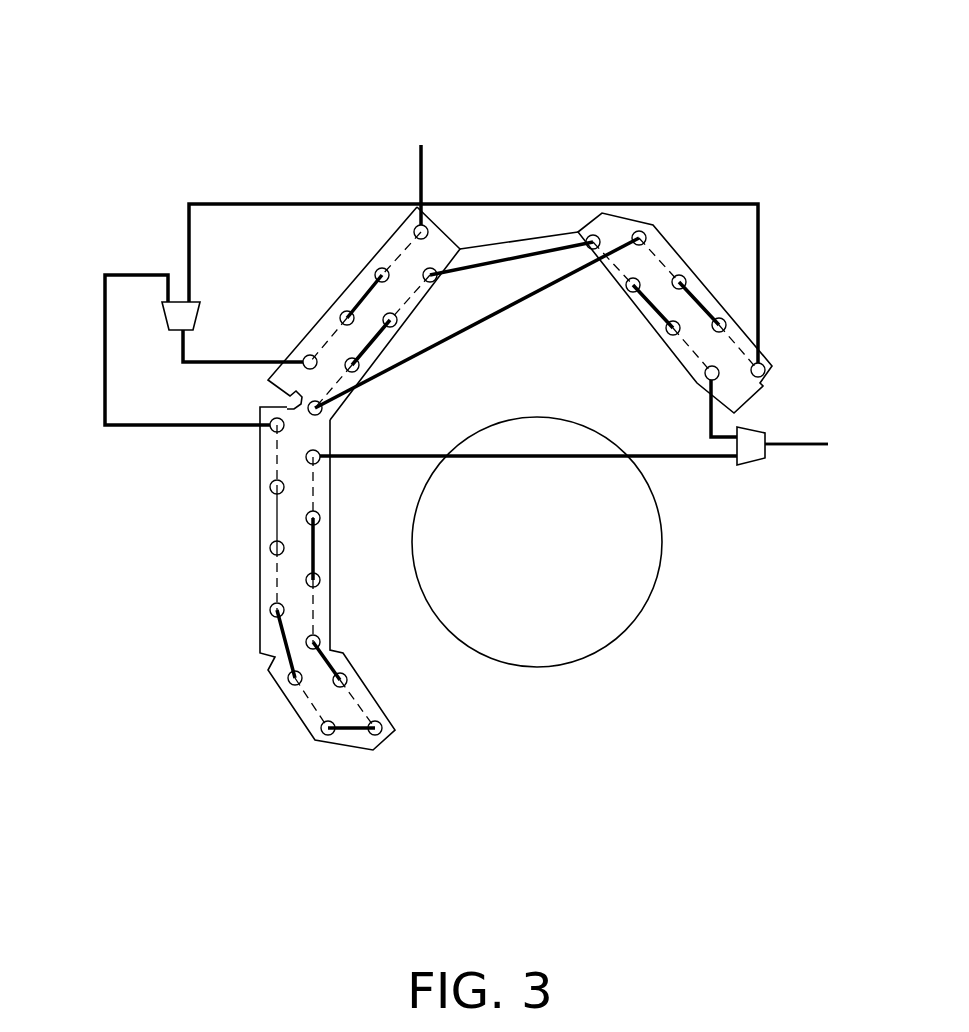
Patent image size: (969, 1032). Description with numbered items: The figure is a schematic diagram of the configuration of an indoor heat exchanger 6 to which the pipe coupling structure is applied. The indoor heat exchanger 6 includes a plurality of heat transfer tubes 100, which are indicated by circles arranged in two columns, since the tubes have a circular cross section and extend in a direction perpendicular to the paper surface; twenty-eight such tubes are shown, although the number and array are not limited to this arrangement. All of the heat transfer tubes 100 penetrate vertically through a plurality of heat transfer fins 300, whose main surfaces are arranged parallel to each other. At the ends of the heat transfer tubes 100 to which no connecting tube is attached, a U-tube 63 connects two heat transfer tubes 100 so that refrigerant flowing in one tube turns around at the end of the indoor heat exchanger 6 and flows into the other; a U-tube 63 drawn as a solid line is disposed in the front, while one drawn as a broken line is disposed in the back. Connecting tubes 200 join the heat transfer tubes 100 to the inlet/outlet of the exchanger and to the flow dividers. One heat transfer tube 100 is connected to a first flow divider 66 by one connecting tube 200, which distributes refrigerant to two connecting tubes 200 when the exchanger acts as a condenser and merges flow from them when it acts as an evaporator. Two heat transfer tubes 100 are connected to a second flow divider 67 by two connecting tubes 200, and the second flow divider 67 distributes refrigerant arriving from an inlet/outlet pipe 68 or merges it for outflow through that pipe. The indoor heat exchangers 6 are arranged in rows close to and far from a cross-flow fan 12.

The indoor heat exchanger 6 is at (757, 84).
The cross-flow fan 12 is at (555, 628).
The U-tube 63 is at (277, 577).
The first flow divider 66 is at (177, 330).
The second flow divider 67 is at (750, 452).
The inlet/outlet pipe 68 is at (793, 446).
The heat transfer tube 100 is at (413, 212).
The connecting tube 200 is at (421, 163).
The heat transfer fin 300 is at (695, 288).